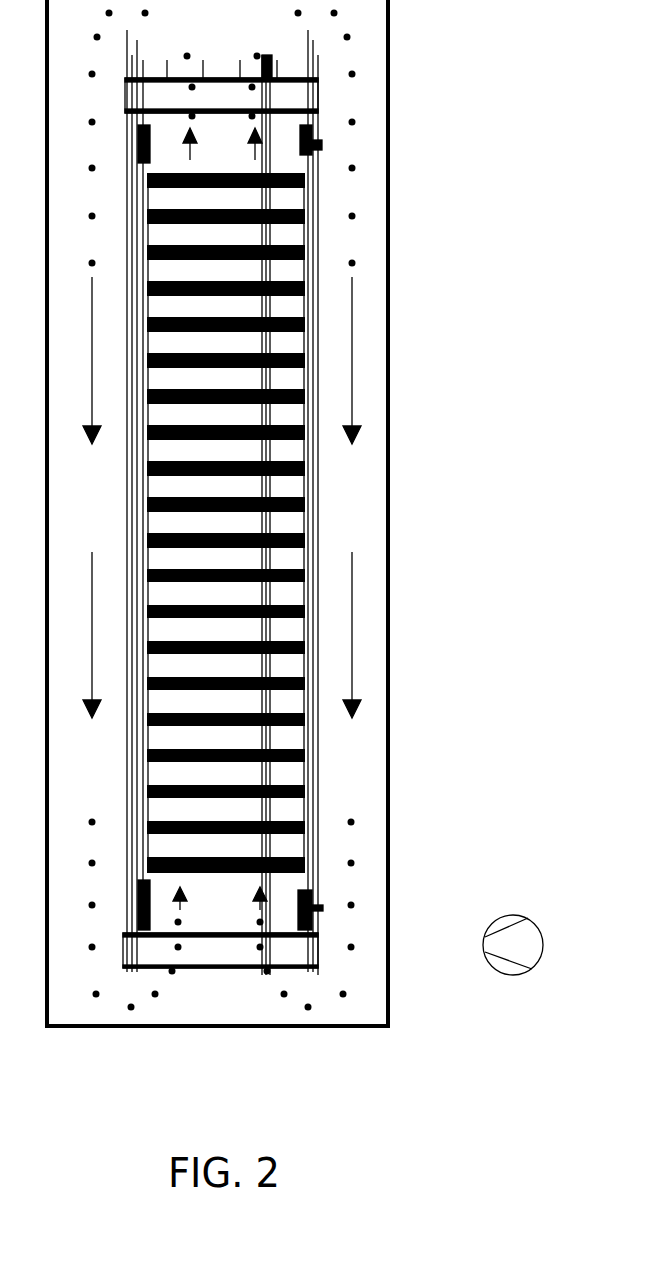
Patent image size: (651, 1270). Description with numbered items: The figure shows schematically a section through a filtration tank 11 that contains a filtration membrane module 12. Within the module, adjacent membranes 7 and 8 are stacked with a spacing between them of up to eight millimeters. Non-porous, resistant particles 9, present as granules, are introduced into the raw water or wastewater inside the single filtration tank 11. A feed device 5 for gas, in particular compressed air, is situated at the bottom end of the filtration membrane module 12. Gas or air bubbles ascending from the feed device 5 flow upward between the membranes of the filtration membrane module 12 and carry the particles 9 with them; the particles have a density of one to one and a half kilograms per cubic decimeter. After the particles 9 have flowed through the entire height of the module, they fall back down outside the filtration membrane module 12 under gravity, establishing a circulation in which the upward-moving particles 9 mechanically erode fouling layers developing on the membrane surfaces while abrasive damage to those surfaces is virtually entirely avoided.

The feed device 5 is at (318, 945).
The membrane 7 is at (305, 470).
The membrane 8 is at (240, 530).
The particles 9 is at (352, 221).
The filtration tank 11 is at (388, 815).
The filtration membrane module 12 is at (318, 709).